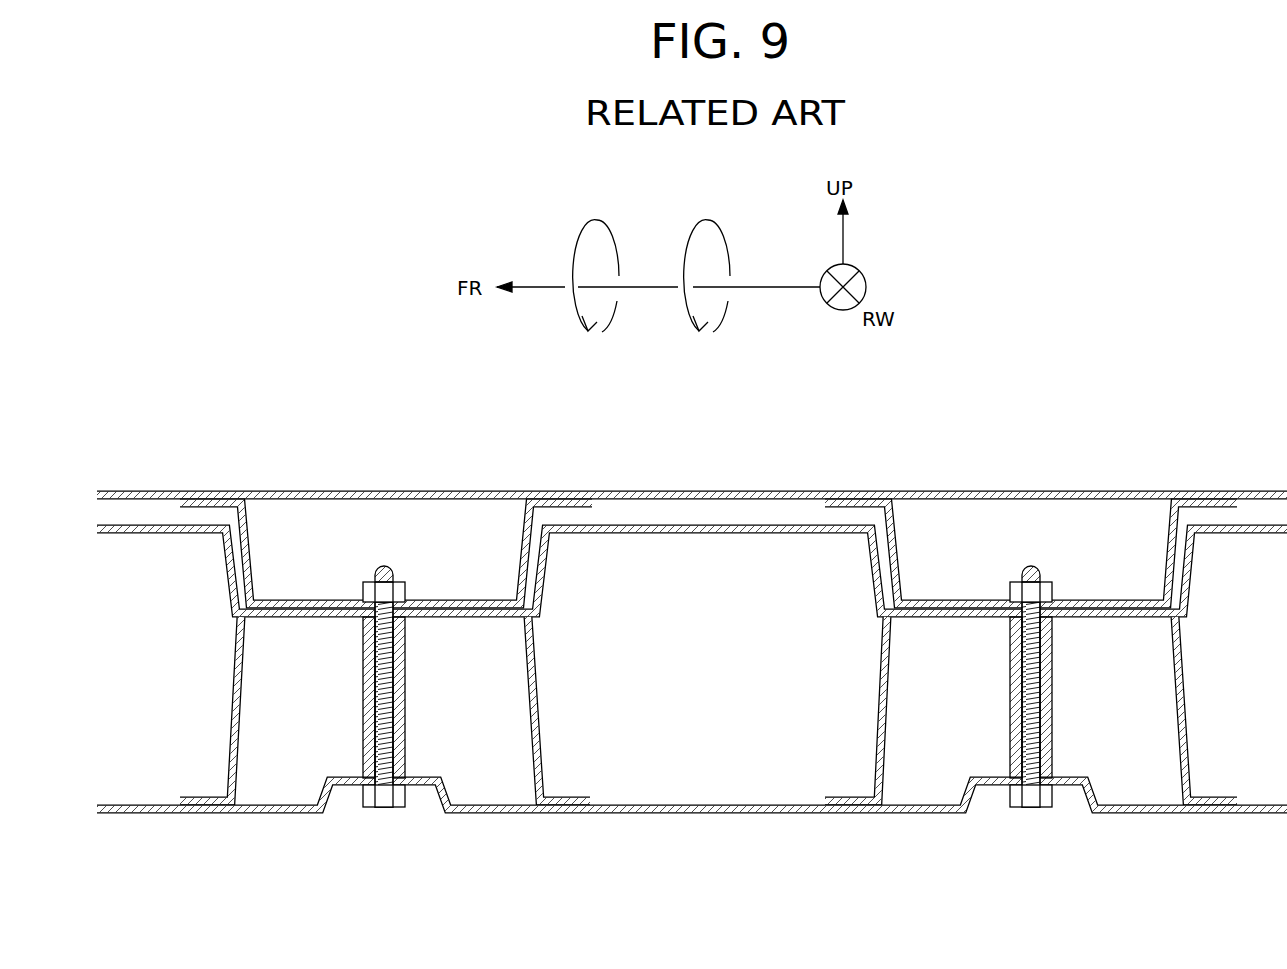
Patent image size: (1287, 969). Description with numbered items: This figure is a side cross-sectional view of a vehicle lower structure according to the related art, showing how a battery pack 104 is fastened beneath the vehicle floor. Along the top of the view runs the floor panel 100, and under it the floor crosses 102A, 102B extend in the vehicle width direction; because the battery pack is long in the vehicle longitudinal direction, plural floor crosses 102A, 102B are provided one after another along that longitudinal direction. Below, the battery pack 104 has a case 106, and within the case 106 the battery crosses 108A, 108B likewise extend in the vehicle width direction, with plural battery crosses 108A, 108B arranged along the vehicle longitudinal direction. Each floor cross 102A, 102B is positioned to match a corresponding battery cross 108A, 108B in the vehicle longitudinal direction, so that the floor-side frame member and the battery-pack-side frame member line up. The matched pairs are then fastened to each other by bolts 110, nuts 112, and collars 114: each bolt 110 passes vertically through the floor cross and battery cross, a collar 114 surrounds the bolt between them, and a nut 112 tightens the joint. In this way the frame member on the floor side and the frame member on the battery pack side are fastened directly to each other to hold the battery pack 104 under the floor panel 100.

The floor panel 100 is at (153, 490).
The floor cross 102A is at (518, 545).
The floor cross 102B is at (1165, 532).
The battery pack 104 is at (657, 815).
The case 106 is at (640, 533).
The battery cross 108A is at (540, 708).
The battery cross 108B is at (875, 717).
The bolt 110 is at (383, 808).
The nut 112 is at (365, 592).
The collar 114 is at (367, 705).